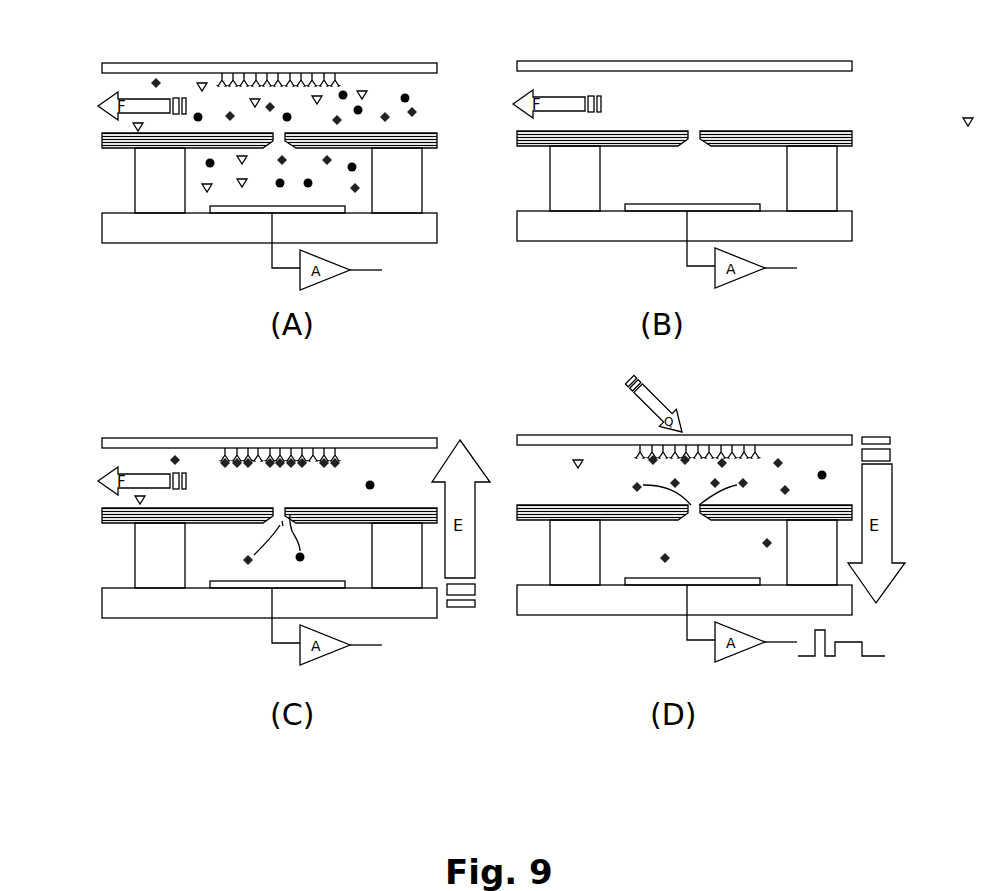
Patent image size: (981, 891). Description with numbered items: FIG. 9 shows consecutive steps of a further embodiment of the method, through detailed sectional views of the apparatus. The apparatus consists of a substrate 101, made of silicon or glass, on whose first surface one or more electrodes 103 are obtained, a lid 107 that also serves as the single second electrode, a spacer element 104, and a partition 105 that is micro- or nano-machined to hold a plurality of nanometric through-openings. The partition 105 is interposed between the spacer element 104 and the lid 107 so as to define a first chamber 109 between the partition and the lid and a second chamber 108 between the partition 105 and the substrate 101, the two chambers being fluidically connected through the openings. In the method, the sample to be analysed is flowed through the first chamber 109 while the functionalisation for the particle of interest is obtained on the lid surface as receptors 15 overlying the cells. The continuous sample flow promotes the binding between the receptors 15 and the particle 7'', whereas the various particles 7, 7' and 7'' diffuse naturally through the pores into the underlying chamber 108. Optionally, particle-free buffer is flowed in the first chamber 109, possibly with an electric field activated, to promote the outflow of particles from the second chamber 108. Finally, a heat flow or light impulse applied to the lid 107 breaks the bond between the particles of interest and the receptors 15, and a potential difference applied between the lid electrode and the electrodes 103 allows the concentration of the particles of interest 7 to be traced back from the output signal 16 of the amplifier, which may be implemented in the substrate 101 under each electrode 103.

The first chamber 109 is at (140, 90).
The lid 107 is at (180, 63).
The antibodies / capture molecules 15 is at (246, 73).
The partition 105 is at (276, 133).
The particle 7 is at (361, 72).
The particle 7' is at (380, 71).
The particle 7'' is at (418, 80).
The second chamber 108 is at (190, 174).
The spacer element 104 is at (135, 175).
The substrate 101 is at (142, 243).
The electrode 103 is at (261, 223).
The output pulse signal 16 is at (796, 658).